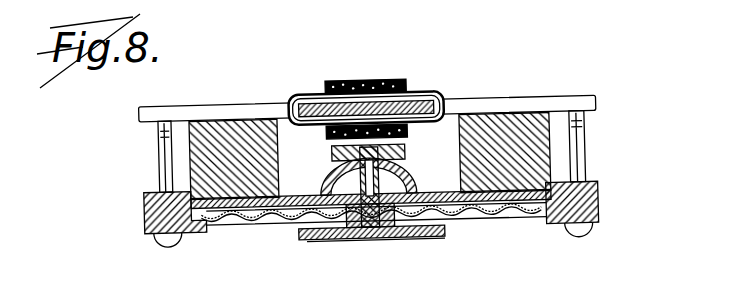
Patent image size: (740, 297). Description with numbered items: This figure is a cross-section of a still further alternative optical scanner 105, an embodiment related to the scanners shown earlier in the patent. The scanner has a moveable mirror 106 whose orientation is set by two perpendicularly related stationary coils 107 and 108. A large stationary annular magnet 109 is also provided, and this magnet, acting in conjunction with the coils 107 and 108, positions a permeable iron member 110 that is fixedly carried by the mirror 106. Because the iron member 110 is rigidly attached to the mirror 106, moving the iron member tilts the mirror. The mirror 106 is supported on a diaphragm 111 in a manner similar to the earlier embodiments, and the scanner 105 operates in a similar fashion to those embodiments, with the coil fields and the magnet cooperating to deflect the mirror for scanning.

The optical scanner 105 is at (530, 75).
The moveable mirror 106 is at (310, 237).
The stationary coil 107 is at (383, 80).
The stationary coil 108 is at (298, 93).
The stationary annular magnet 109 is at (540, 141).
The permeable iron member 110 is at (333, 149).
The diaphragm 111 is at (262, 222).